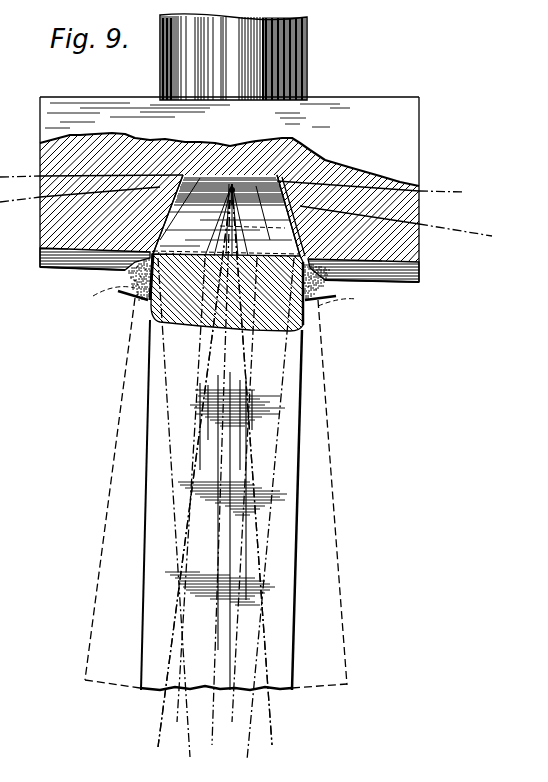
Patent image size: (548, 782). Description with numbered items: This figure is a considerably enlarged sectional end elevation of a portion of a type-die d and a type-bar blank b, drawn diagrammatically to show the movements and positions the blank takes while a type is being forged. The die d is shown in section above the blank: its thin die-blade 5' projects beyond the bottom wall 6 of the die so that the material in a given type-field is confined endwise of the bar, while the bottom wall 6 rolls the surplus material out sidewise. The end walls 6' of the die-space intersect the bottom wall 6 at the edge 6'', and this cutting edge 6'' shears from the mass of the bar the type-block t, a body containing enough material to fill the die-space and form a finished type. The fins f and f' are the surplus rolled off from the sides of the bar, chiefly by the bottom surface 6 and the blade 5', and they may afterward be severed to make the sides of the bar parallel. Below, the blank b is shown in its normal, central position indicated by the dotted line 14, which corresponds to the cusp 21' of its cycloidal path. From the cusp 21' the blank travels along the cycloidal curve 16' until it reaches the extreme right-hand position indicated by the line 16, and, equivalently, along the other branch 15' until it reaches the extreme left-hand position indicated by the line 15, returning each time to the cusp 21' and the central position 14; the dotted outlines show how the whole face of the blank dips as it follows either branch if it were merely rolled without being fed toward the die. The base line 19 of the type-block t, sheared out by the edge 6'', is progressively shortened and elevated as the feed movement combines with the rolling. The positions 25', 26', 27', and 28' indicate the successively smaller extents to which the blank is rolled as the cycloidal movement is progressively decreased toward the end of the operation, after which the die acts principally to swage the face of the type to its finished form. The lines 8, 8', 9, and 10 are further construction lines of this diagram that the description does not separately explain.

The type-die d is at (246, 189).
The type-block t is at (229, 215).
The type-bar blank b is at (216, 494).
The fin f is at (104, 298).
The fin f' is at (344, 311).
The die-blade 5' is at (245, 267).
The bottom wall of the die 6 is at (319, 300).
The end wall of the die-space 6' is at (200, 185).
The cutting edge 6'' is at (125, 295).
The injection line 8 is at (203, 187).
The injection line 8' is at (239, 179).
The line 9 is at (205, 178).
The hatched plug 10 is at (226, 292).
The central position line 14 is at (216, 482).
The extreme left-hand position line 15 is at (187, 485).
The cycloidal curve branch 15' is at (194, 473).
The extreme right-hand position line 16 is at (258, 483).
The cycloidal curve branch 16' is at (255, 472).
The base line of the type-block 19 is at (304, 326).
The cusp 21' is at (205, 156).
The rolled position of the blank 25' is at (263, 519).
The rolled position of the blank 26' is at (185, 501).
The rolled position of the blank 27' is at (237, 501).
The rolled position of the blank 28' is at (180, 519).